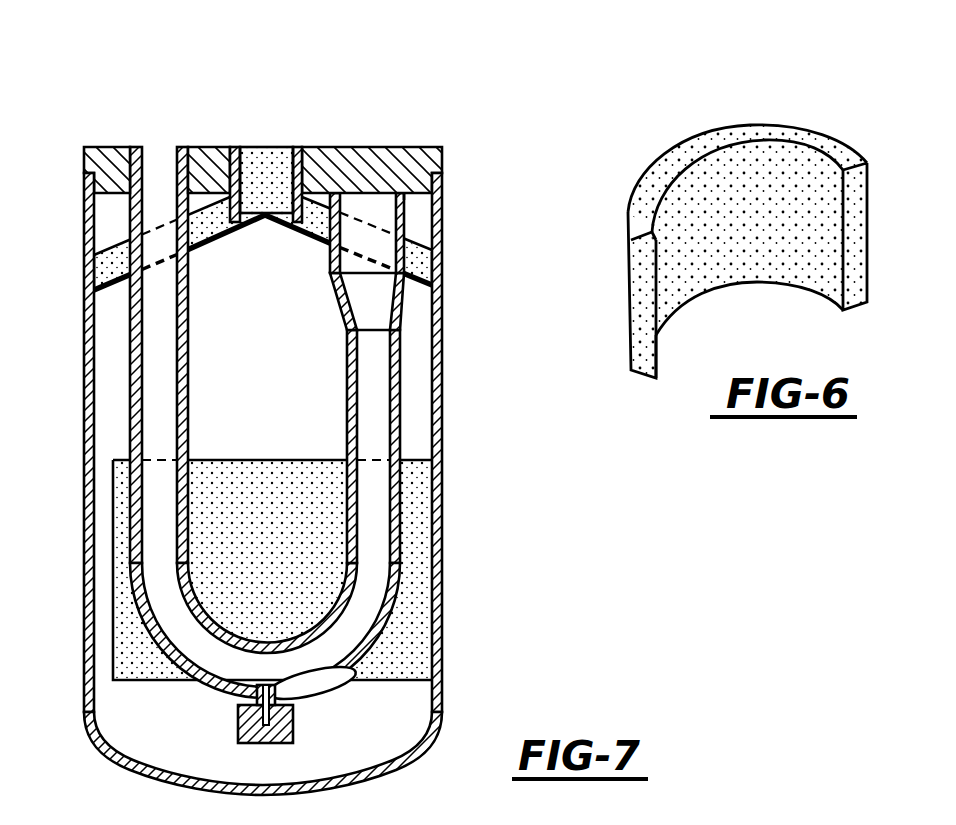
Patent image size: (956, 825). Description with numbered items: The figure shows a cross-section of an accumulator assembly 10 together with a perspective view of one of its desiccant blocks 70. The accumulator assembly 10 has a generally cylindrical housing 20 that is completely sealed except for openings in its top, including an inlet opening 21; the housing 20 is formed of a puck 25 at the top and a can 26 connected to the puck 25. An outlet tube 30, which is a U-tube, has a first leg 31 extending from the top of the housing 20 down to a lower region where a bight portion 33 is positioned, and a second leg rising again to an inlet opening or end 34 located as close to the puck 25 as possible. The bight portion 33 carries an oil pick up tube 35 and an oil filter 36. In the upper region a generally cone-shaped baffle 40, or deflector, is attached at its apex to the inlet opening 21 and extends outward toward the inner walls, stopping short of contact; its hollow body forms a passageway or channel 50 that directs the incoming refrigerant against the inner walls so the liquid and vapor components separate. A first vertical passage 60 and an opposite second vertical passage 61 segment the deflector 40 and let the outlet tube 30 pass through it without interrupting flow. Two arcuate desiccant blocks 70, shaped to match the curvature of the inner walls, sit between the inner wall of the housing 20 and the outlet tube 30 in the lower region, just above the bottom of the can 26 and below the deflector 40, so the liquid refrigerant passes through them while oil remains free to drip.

In FIG. 7, the accumulator assembly 10 is at (70, 114).
In FIG. 7, the housing 20 is at (317, 488).
In FIG. 7, the inlet opening 21 is at (290, 158).
In FIG. 7, the puck 25 is at (413, 150).
In FIG. 7, the can 26 is at (176, 790).
In FIG. 7, the outlet tube 30 is at (157, 160).
In FIG. 7, the first leg 31 is at (388, 637).
In FIG. 7, the bight portion 33 is at (188, 692).
In FIG. 7, the inlet opening or end 34 is at (428, 230).
In FIG. 7, the oil pick up tube 35 is at (328, 668).
In FIG. 7, the oil filter 36 is at (293, 713).
In FIG. 7, the baffle 40 is at (294, 248).
In FIG. 7, the passageway or channel 50 is at (262, 168).
In FIG. 7, the first vertical passage 60 is at (116, 304).
In FIG. 7, the second vertical passage 61 is at (417, 302).
In FIG. 7, the desiccant block 70 is at (430, 545).
In FIG. 6, the desiccant block 70 is at (773, 127).